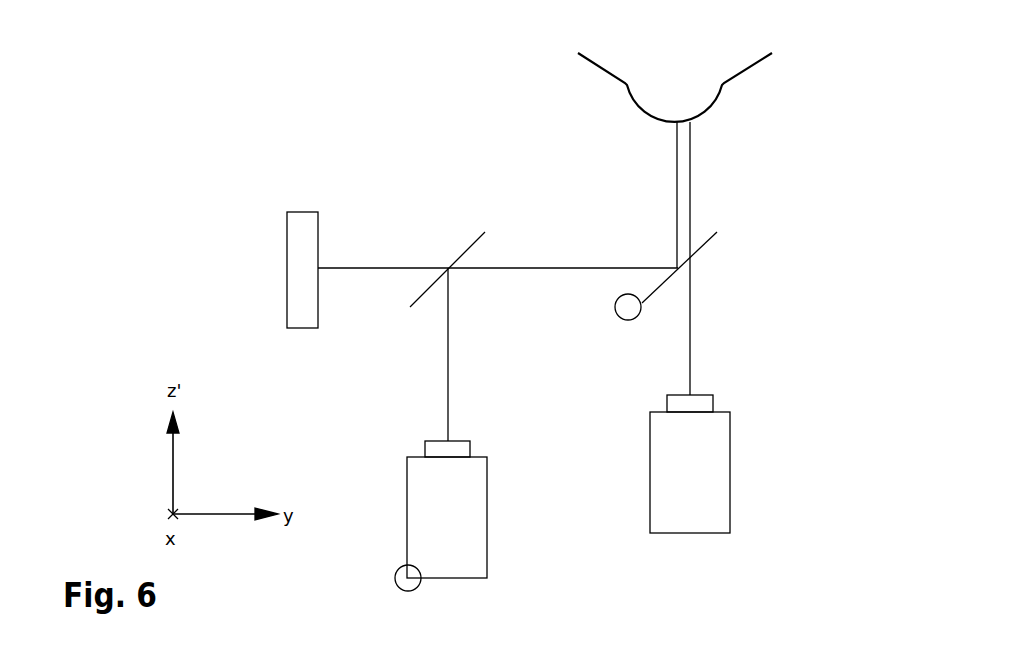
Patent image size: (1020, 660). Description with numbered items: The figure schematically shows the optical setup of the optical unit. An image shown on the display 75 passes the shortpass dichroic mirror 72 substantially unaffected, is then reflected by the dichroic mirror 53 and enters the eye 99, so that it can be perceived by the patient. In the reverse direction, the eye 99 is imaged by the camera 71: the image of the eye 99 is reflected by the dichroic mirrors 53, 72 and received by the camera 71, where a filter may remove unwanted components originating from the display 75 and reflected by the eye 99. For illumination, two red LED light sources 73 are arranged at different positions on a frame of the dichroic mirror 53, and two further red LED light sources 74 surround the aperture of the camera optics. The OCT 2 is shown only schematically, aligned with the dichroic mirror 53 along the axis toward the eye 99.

The OCT 2 is at (713, 477).
The dichroic mirror 53 is at (707, 243).
The camera 71 is at (478, 502).
The dichroic mirror 72 is at (478, 232).
The LED light sources 73 is at (625, 308).
The LED light sources 74 is at (403, 580).
The display 75 is at (302, 210).
The eye 99 is at (707, 95).